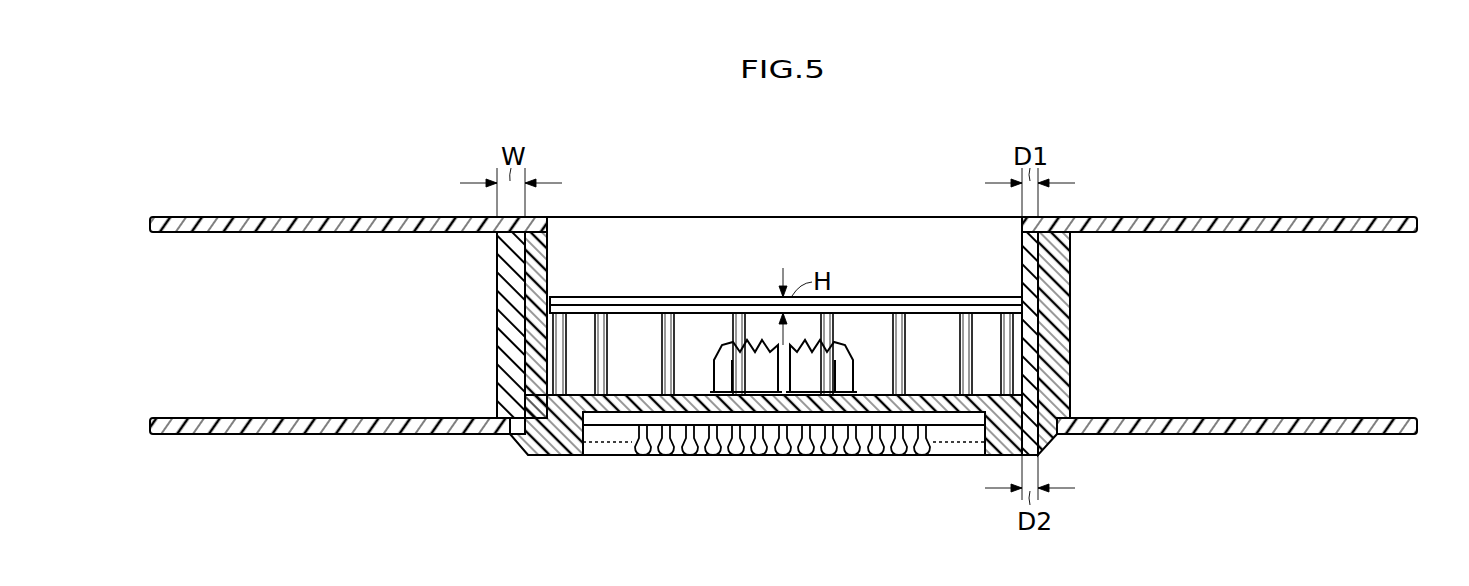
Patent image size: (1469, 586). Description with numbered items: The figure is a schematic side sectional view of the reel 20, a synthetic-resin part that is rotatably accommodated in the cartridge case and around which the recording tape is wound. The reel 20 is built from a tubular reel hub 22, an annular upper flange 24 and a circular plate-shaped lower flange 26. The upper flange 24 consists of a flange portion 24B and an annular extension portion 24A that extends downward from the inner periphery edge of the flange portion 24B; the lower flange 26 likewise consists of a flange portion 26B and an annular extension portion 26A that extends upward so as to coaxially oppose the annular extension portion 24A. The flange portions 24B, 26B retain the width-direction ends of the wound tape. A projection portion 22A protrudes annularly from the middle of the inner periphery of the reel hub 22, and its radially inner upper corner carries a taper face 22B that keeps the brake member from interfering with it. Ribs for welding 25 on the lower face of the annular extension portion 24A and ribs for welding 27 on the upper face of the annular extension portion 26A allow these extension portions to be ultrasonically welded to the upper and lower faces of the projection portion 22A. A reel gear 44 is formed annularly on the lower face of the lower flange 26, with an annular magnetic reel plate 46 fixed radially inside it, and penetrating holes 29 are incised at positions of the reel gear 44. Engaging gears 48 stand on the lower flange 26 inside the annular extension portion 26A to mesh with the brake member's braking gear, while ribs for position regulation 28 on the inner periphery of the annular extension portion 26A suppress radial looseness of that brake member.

The reel 20 is at (1182, 152).
The reel hub 22 is at (1079, 317).
The projection portion 22A is at (536, 304).
The taper face 22B is at (1032, 306).
The upper flange 24 is at (1371, 212).
The annular extension portion 24A is at (541, 258).
The flange portion 24B is at (1291, 222).
The ribs for welding 25 is at (531, 280).
The lower flange 26 is at (1372, 441).
The annular extension portion 26A is at (520, 372).
The flange portion 26B is at (1282, 436).
The ribs for welding 27 is at (538, 357).
The ribs for position regulation 28 is at (673, 350).
The penetrating holes 29 is at (605, 400).
The reel gear 44 is at (783, 455).
The reel plate 46 is at (618, 422).
The engaging gears 48 is at (760, 365).